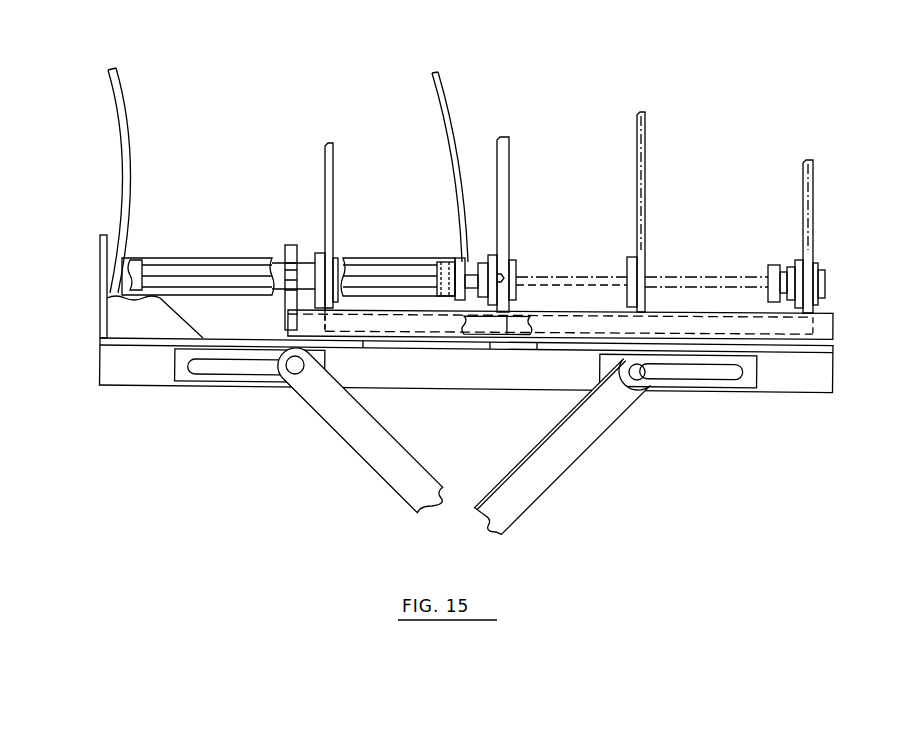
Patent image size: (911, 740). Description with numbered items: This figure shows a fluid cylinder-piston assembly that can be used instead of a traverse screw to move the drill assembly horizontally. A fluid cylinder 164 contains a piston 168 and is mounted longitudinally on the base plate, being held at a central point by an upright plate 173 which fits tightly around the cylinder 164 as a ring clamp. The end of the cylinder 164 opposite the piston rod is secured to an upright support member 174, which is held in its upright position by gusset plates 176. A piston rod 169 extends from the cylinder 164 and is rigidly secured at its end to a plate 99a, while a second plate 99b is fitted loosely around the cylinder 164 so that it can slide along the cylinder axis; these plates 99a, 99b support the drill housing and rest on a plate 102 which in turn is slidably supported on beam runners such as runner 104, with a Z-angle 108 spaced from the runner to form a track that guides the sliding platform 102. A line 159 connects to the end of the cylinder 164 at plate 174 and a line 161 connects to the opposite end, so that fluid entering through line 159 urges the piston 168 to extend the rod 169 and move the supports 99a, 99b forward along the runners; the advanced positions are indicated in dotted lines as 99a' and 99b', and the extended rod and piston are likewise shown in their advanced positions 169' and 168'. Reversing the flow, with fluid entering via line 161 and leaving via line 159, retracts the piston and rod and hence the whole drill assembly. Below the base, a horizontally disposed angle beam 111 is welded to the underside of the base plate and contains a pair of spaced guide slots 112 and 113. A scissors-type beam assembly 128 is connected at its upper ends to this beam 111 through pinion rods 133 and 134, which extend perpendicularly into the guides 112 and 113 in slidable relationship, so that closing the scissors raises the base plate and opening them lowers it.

The plate 99a is at (529, 206).
The plate 99b is at (351, 222).
The extended position of plate 99a 99a' is at (823, 217).
The extended position of plate 99b 99b' is at (664, 198).
The plate 102 is at (485, 322).
The beam runner 104 is at (522, 328).
The Z-angle 108 is at (598, 368).
The beam member 111 is at (505, 404).
The guide slot 112 is at (233, 362).
The guide slot 113 is at (710, 367).
The scissors-type beam assembly 128 is at (364, 430).
The pinion rod 133 is at (293, 368).
The pinion rod 134 is at (640, 375).
The line 159 is at (118, 88).
The line 161 is at (443, 85).
The fluid cylinder 164 is at (180, 257).
The piston 168 is at (156, 243).
The roller end collar 168' is at (438, 250).
The piston rod 169 is at (322, 232).
The shaft 169' is at (740, 252).
The upright plate 173 is at (290, 243).
The upright support member 174 is at (99, 249).
The gusset plate 176 is at (135, 323).